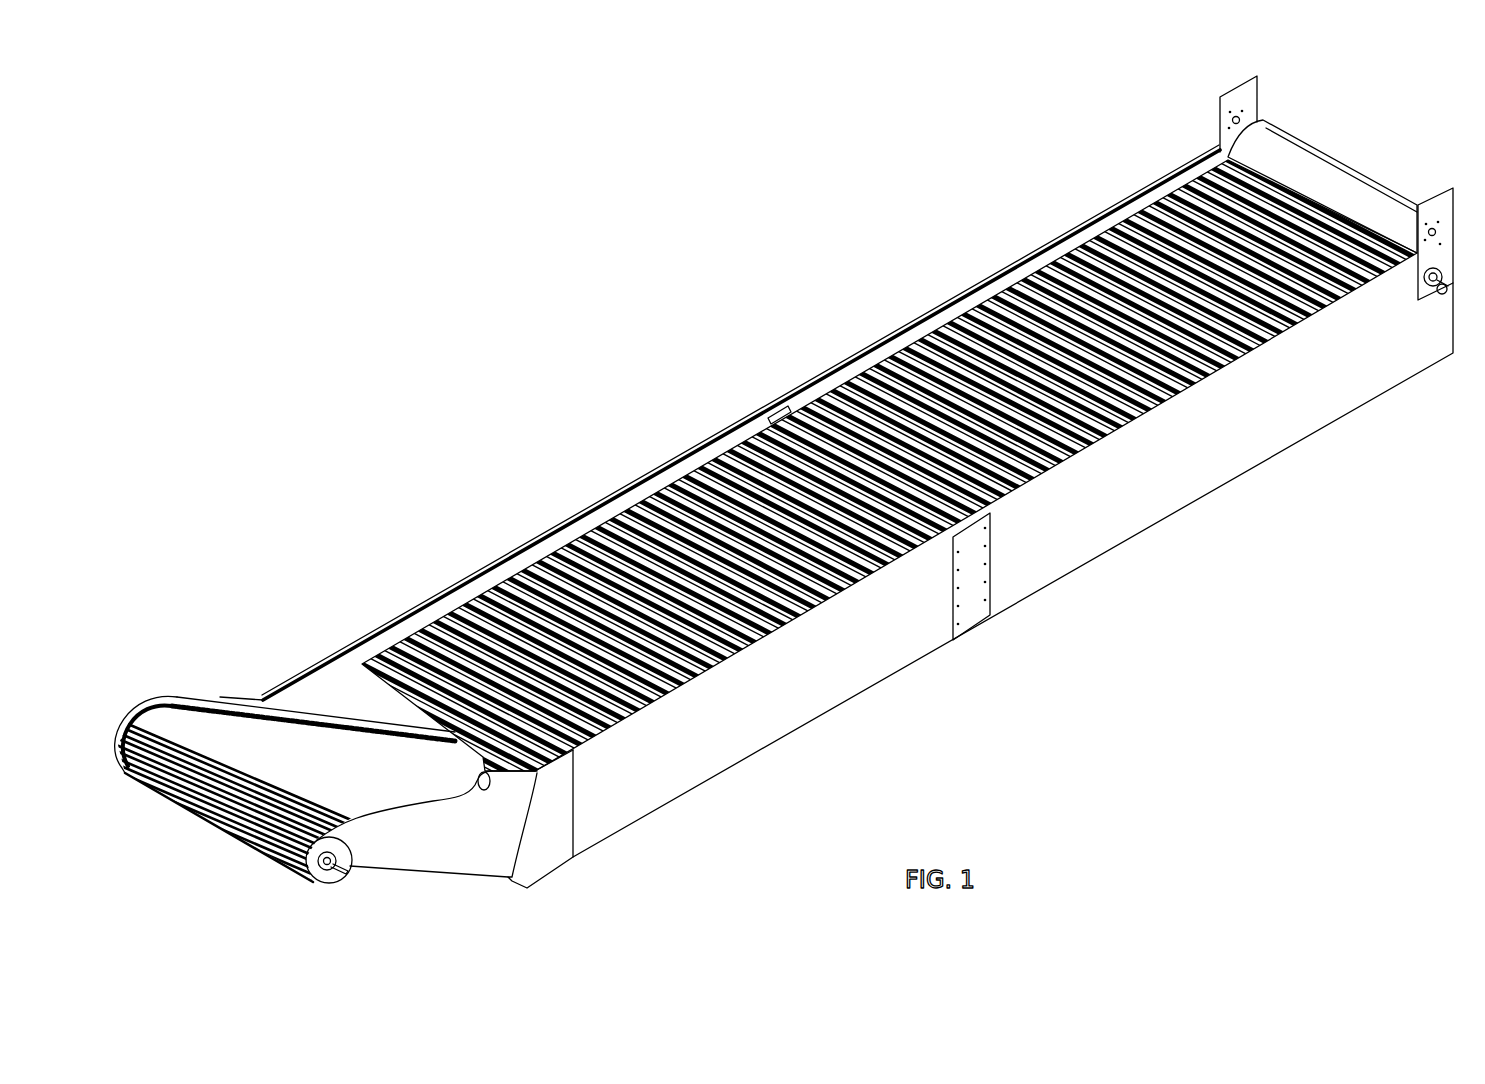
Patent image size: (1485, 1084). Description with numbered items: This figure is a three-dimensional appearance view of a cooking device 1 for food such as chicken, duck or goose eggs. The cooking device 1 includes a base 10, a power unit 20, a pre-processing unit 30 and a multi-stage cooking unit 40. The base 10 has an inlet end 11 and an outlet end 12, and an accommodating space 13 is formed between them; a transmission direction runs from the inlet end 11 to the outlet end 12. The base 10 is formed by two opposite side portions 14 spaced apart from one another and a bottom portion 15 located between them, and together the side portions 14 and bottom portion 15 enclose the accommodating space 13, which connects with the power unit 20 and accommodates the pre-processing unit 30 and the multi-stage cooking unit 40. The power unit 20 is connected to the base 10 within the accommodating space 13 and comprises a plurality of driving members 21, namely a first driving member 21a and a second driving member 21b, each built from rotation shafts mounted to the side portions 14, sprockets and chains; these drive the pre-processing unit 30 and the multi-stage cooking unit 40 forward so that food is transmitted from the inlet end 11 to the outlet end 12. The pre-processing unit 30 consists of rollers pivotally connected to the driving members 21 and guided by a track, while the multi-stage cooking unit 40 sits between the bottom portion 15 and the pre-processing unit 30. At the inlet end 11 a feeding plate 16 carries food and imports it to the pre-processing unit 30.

The cooking device 1 is at (453, 318).
The base 10 is at (790, 387).
The inlet end 11 is at (1362, 150).
The outlet end 12 is at (208, 833).
The accommodating space 13 is at (297, 711).
The side portions 14 is at (918, 330).
The bottom portion 15 is at (1227, 483).
The feeding plate 16 is at (1298, 160).
The power unit 20 is at (457, 553).
The driving members 21 is at (358, 716).
The first driving member 21a is at (741, 422).
The second driving member 21b is at (313, 719).
The pre-processing unit 30 is at (610, 506).
The multi-stage cooking unit 40 is at (333, 702).